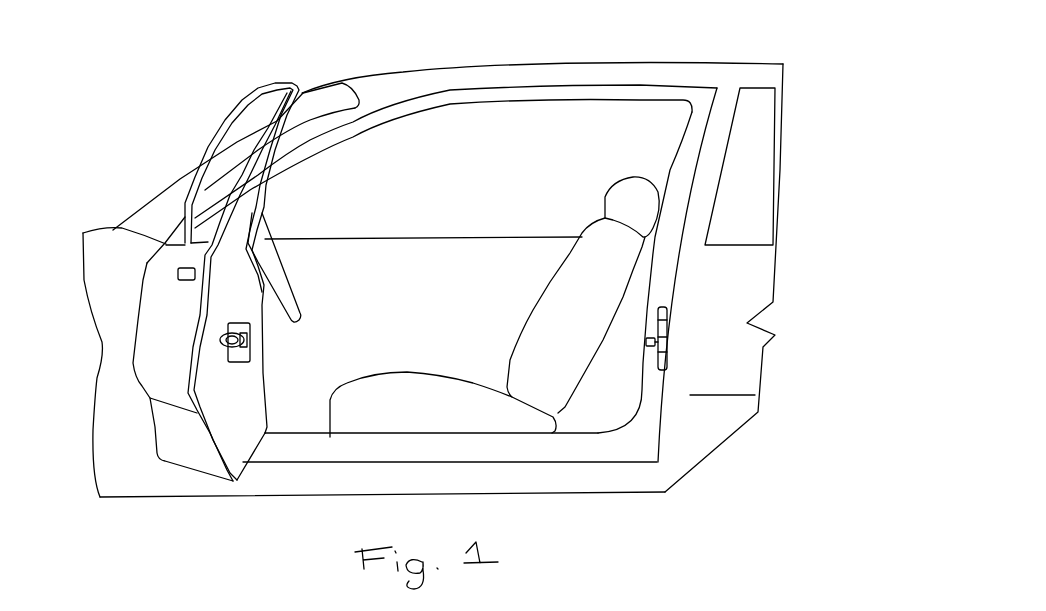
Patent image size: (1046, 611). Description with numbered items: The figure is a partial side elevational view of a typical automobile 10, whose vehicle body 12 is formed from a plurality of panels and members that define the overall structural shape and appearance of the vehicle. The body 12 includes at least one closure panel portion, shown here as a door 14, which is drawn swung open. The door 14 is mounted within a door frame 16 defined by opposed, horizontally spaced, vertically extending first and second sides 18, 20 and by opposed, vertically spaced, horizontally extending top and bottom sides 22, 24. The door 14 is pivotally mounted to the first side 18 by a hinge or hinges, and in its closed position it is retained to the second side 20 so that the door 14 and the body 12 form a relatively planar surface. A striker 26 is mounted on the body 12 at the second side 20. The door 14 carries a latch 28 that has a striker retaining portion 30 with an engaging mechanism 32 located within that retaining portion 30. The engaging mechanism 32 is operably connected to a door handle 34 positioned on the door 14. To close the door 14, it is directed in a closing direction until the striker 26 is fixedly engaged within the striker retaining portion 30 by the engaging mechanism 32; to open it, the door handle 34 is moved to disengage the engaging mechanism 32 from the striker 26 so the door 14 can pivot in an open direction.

The automobile 10 is at (176, 14).
The vehicle body 12 is at (633, 63).
The door 14 is at (157, 355).
The door frame 16 is at (573, 448).
The first side 18 is at (150, 262).
The second side 20 is at (692, 140).
The top side 22 is at (485, 101).
The bottom side 24 is at (293, 453).
The striker 26 is at (645, 345).
The latch 28 is at (236, 380).
The striker retaining portion 30 is at (248, 335).
The engaging mechanism 32 is at (248, 340).
The door handle 34 is at (178, 280).